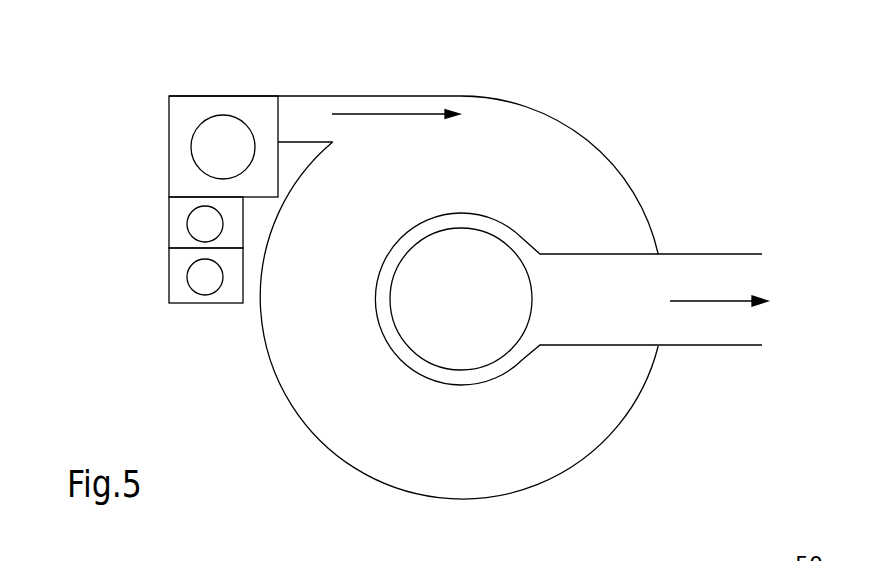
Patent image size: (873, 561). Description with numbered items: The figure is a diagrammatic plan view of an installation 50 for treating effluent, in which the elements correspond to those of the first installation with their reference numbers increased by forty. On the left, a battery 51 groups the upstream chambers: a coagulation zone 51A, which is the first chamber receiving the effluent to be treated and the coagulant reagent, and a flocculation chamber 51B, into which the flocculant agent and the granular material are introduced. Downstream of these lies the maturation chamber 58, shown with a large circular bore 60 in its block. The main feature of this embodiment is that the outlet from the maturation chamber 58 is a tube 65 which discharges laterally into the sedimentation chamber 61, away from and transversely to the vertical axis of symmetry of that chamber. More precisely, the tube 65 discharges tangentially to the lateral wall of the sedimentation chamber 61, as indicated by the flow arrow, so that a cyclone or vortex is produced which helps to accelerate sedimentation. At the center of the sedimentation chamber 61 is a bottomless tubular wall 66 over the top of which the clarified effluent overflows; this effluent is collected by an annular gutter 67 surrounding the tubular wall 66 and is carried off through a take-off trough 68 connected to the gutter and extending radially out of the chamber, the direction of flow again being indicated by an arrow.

The installation 50 is at (690, 113).
The battery 51 is at (125, 250).
The coagulation zone 51A is at (207, 303).
The flocculation chamber 51B is at (169, 220).
The maturation chamber 58 is at (169, 138).
The bore 60 is at (222, 133).
The sedimentation chamber 61 is at (587, 399).
The tube 65 is at (307, 118).
The tubular wall 66 is at (395, 323).
The annular gutter 67 is at (455, 221).
The take-off trough 68 is at (608, 278).